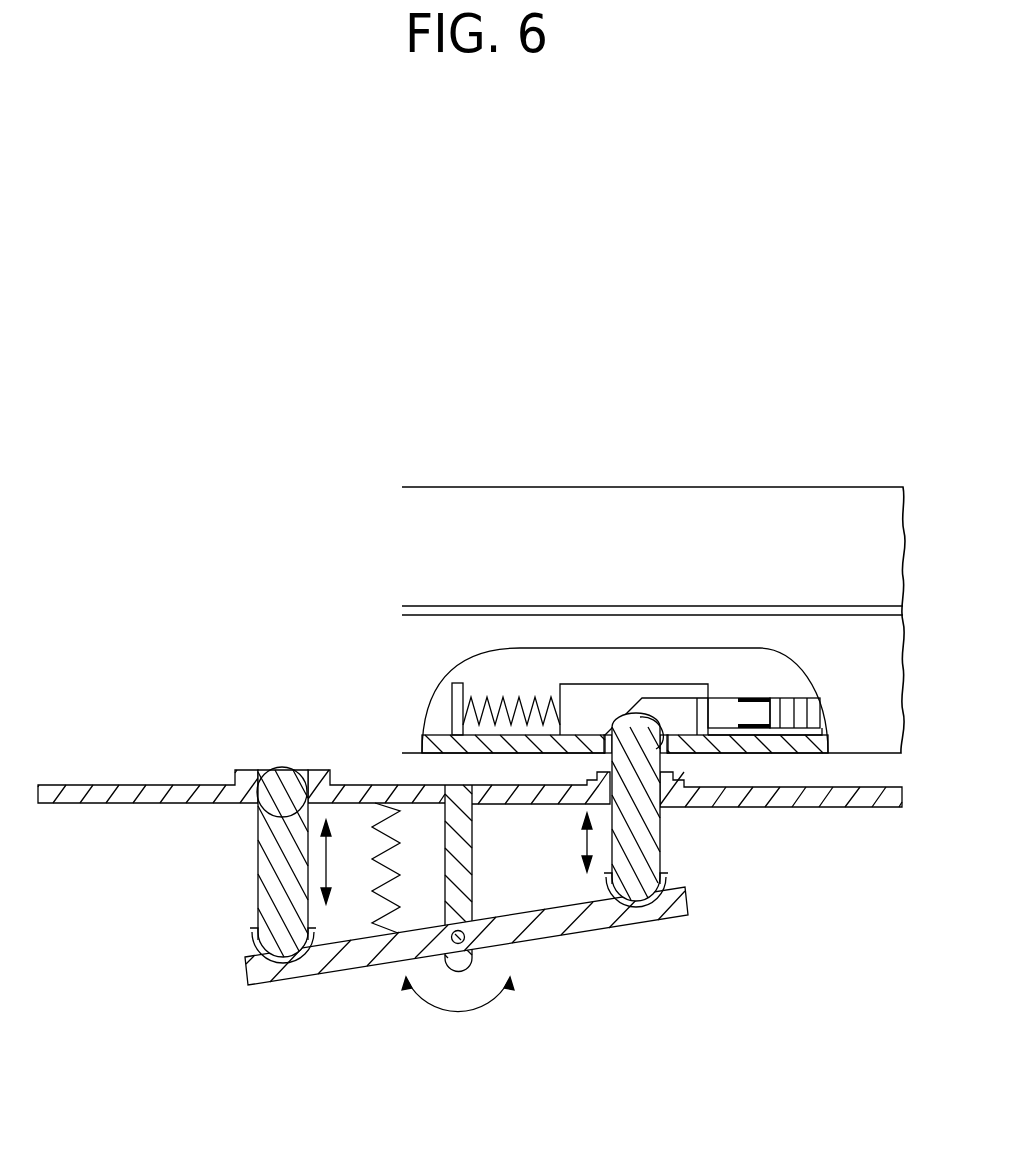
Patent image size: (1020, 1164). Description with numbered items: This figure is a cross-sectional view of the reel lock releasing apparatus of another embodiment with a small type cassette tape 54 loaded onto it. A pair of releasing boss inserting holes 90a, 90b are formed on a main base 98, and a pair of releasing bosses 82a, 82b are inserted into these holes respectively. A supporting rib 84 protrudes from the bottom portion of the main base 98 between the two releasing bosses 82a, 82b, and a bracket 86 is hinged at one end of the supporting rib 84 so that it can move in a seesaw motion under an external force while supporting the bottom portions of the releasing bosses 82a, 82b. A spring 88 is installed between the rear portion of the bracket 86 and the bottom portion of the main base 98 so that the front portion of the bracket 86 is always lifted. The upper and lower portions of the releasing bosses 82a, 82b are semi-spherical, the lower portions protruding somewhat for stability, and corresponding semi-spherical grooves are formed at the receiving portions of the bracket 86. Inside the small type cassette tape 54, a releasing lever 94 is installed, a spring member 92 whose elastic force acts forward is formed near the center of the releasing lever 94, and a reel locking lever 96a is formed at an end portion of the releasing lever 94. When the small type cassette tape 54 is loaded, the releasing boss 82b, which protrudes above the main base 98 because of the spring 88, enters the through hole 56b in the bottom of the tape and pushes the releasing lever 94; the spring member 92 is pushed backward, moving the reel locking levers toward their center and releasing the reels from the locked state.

The small type cassette tape 54 is at (853, 487).
The through hole 56b is at (651, 698).
The spring member 92 is at (496, 696).
The releasing lever 94 is at (572, 684).
The reel locking lever 96a is at (732, 698).
The main base 98 is at (847, 808).
The supporting rib 84 is at (475, 852).
The bracket 86 is at (613, 917).
The spring 88 is at (373, 877).
The releasing boss inserting hole 90a is at (270, 807).
The releasing boss inserting hole 90b is at (660, 818).
The releasing boss 82a is at (268, 905).
The releasing boss 82b is at (660, 850).